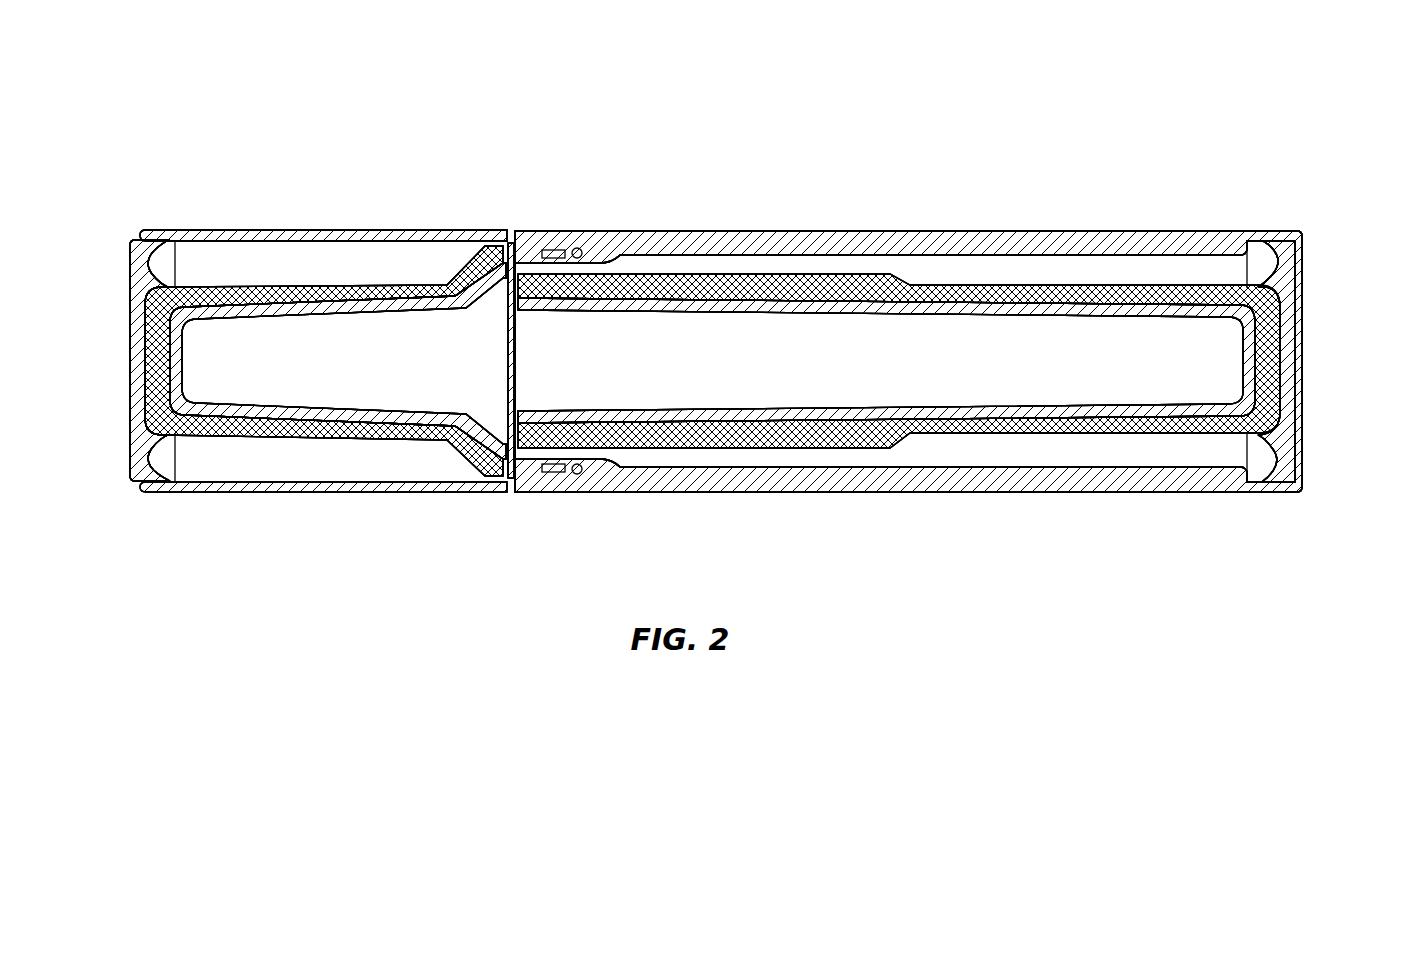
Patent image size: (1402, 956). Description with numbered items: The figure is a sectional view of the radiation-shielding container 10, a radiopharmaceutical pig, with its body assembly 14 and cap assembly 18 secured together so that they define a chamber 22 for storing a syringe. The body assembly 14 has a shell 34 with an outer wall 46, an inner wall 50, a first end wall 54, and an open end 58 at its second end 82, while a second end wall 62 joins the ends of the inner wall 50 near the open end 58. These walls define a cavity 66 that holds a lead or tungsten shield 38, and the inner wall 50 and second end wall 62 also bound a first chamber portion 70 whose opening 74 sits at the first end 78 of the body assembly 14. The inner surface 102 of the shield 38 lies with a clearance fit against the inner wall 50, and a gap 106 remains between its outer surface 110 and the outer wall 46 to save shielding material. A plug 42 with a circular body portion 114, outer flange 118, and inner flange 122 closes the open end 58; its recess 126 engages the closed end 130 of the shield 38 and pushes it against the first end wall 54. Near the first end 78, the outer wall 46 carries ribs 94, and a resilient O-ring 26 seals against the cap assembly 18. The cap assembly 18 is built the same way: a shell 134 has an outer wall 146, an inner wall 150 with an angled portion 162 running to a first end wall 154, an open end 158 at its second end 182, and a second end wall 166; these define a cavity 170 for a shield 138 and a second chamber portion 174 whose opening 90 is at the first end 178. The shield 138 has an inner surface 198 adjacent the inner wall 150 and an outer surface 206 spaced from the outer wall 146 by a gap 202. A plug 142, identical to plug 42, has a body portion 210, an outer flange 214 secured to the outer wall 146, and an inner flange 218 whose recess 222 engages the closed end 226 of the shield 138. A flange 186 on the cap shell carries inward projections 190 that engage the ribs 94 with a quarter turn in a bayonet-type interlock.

The radiation-shielding container 10 is at (570, 93).
The body assembly 14 is at (893, 193).
The cap assembly 18 is at (256, 191).
The chamber 22 is at (652, 393).
The O-ring 26 is at (582, 492).
The shell 34 is at (1118, 234).
The shield 38 is at (1030, 291).
The plug 42 is at (1277, 439).
The outer wall 46 is at (690, 234).
The inner wall 50 is at (697, 306).
The first end wall 54 is at (521, 494).
The open end 58 is at (1238, 460).
The second end wall 62 is at (1243, 358).
The cavity 66 is at (1058, 462).
The first chamber portion 70 is at (902, 384).
The opening 74 is at (517, 350).
The first end 78 is at (548, 406).
The second end 82 is at (1270, 215).
The opening 90 is at (508, 320).
The ribs 94 is at (546, 255).
The inner surface 102 is at (871, 442).
The gap 106 is at (968, 442).
The outer surface 110 is at (770, 267).
The body portion 114 is at (1291, 320).
The outer flange 118 is at (1245, 248).
The inner flange 122 is at (1286, 264).
The recess 126 is at (1292, 386).
The closed end 130 is at (1303, 364).
The shell 134 is at (206, 491).
The shield 138 is at (348, 438).
The plug 142 is at (140, 340).
The outer wall 146 is at (326, 234).
The inner wall 150 is at (220, 404).
The first end wall 154 is at (509, 242).
The open end 158 is at (188, 268).
The angled portion 162 is at (497, 430).
The second end wall 166 is at (186, 378).
The cavity 170 is at (362, 262).
The second chamber portion 174 is at (386, 384).
The first end 178 is at (510, 494).
The second end 182 is at (152, 511).
The flange 186 is at (577, 475).
The projections 190 is at (578, 248).
The inner surface 198 is at (264, 440).
The gap 202 is at (314, 428).
The outer surface 206 is at (396, 282).
The body portion 210 is at (138, 430).
The outer flange 214 is at (173, 490).
The inner flange 218 is at (138, 476).
The recess 222 is at (138, 372).
The closed end 226 is at (139, 318).